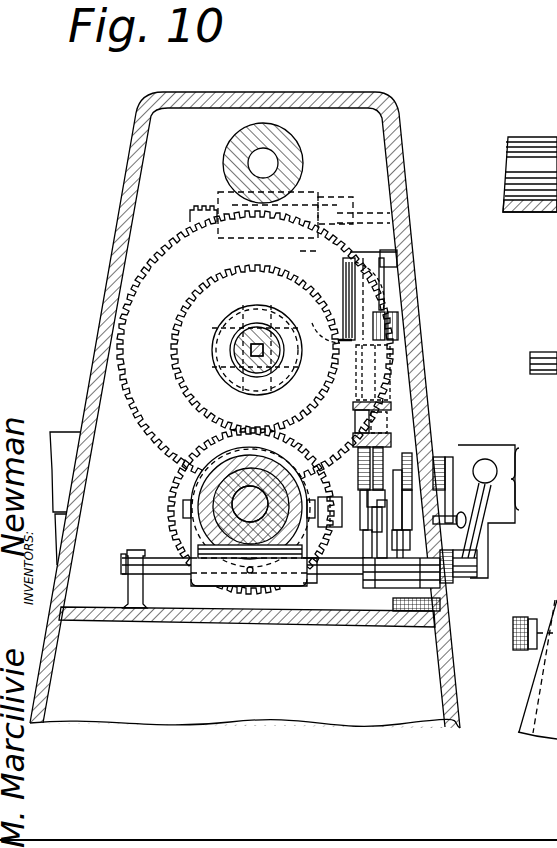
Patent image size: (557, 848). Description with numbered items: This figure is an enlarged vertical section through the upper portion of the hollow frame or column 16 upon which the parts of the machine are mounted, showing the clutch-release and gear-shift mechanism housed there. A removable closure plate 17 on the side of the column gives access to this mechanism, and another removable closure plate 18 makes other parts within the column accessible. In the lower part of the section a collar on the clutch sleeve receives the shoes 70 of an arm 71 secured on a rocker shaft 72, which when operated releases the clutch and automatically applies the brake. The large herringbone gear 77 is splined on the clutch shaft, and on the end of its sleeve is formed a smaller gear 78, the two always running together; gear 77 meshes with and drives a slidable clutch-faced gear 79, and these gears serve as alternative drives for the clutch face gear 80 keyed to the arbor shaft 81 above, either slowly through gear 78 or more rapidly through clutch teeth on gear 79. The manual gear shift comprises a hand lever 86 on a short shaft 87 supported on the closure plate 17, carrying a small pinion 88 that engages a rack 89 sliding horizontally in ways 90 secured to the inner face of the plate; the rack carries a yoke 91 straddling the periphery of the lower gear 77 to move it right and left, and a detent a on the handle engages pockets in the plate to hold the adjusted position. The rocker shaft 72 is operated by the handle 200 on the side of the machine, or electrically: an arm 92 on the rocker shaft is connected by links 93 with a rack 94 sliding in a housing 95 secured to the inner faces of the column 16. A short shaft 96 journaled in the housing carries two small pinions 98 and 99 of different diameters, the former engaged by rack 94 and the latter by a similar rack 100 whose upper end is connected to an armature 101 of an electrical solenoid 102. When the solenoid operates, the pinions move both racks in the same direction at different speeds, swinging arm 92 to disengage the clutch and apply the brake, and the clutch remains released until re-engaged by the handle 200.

The hollow frame or column 16 is at (398, 233).
The removable closure plate 17 is at (417, 325).
The removable closure plate 18 is at (530, 278).
The shoes 70 is at (172, 517).
The arm 71 is at (224, 587).
The rocker shaft 72 is at (158, 545).
The gear 77 is at (182, 485).
The smaller gear 78 is at (186, 506).
The gear 79 is at (210, 290).
The clutch face gear 80 is at (186, 240).
The arbor shaft 81 is at (240, 344).
The hand lever 86 is at (484, 459).
The short shaft 87 is at (461, 497).
The small pinion 88 is at (410, 462).
The rack 89 is at (470, 565).
The ways 90 is at (424, 570).
The yoke 91 is at (314, 572).
The arm 92 is at (388, 566).
The links 93 is at (358, 562).
The rack 94 is at (392, 455).
The housing 95 is at (384, 422).
The short shaft 96 is at (357, 412).
The small pinion 98 is at (392, 392).
The small pinion 99 is at (353, 403).
The rack 100 is at (354, 440).
The armature 101 is at (284, 328).
The electrical solenoid 102 is at (343, 278).
The handle 200 is at (505, 511).
The detent a is at (466, 522).